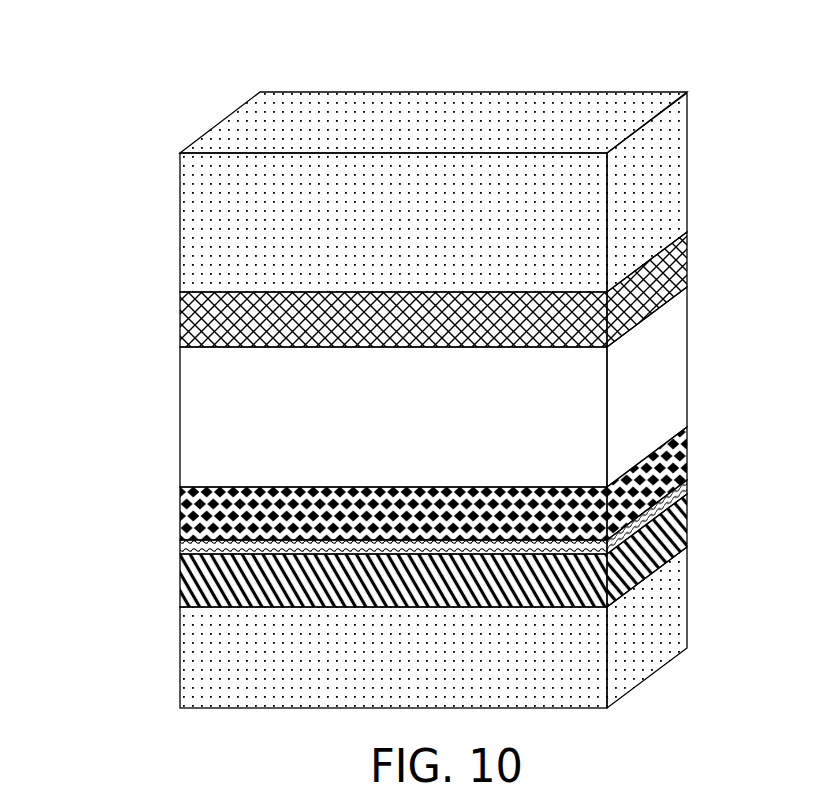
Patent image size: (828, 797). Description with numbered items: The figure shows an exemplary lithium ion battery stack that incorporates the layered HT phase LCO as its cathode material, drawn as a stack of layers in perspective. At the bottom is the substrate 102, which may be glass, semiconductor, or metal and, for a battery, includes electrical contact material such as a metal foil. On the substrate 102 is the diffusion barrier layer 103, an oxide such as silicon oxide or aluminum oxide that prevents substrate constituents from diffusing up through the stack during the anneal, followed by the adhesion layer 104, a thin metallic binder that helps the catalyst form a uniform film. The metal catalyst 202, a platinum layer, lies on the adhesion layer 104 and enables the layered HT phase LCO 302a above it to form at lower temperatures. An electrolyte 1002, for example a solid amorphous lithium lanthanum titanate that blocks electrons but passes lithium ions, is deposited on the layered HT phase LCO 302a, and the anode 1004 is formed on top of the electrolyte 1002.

The anode 1004 is at (178, 223).
The electrolyte 1002 is at (178, 320).
The layered HT phase LCO 302a is at (178, 412).
The metal catalyst 202 is at (178, 510).
The adhesion layer 104 is at (178, 546).
The diffusion barrier layer 103 is at (178, 578).
The substrate 102 is at (178, 648).